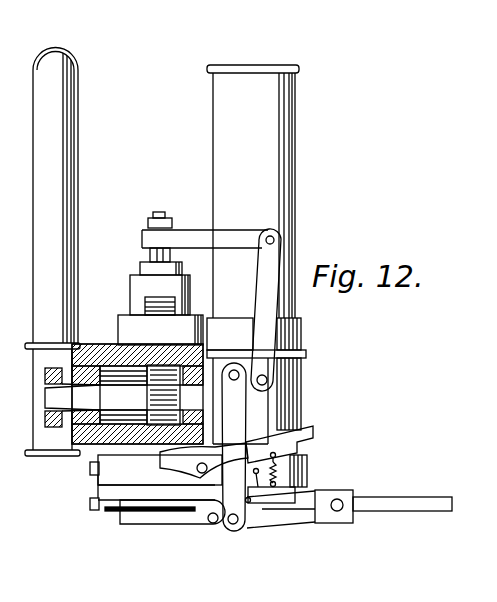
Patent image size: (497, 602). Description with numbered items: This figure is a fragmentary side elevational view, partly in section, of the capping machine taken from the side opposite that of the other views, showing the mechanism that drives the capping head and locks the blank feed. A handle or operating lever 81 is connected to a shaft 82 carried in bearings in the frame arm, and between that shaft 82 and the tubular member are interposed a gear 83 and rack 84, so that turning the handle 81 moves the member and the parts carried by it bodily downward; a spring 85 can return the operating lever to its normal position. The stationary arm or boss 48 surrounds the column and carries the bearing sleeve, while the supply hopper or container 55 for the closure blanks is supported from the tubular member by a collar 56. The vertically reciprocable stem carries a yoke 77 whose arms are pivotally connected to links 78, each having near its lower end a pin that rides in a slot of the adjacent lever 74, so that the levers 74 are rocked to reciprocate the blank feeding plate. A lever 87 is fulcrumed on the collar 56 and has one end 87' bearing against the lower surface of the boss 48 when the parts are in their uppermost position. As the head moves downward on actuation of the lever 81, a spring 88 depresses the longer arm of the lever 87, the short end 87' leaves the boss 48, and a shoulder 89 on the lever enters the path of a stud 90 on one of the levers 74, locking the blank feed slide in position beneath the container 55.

The operating lever 81 is at (62, 272).
The shaft 82 is at (72, 396).
The spring 85 is at (110, 345).
The arm or boss 48 is at (163, 402).
The supply hopper or container 55 is at (297, 384).
The rack 84 is at (175, 312).
The yoke 77 is at (207, 229).
The link 78 is at (273, 267).
The lever 74 is at (248, 426).
The lever 87 is at (304, 428).
The end of lever 87' is at (204, 502).
The shoulder 89 is at (300, 446).
The spring 88 is at (307, 468).
The gear 83 is at (158, 430).
The collar 56 is at (165, 476).
The stud 90 is at (236, 484).